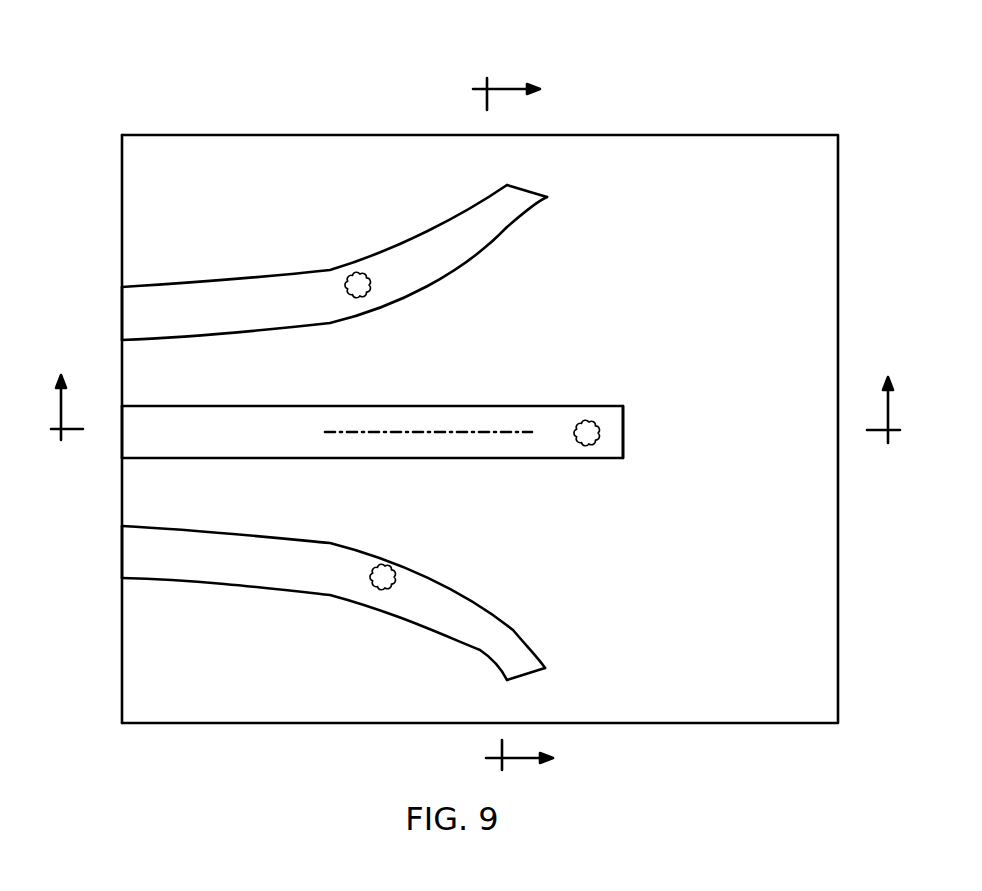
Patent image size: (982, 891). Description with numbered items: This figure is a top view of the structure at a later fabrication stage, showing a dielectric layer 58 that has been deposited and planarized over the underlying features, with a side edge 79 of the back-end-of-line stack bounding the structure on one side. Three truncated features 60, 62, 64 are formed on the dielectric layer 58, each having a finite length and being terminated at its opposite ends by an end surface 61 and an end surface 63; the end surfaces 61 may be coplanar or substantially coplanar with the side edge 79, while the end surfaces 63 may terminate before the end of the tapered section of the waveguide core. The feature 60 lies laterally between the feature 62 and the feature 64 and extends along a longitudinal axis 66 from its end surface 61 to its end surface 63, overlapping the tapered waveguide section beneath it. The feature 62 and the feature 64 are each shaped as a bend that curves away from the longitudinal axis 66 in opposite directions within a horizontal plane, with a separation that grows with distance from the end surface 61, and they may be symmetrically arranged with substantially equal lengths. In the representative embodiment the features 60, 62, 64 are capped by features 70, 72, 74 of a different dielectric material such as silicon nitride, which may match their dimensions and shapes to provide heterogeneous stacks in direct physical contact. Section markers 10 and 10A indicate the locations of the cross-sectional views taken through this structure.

The dielectric layer 58 is at (480, 429).
The side edge 79 is at (122, 250).
The feature 74 is at (260, 303).
The feature 72 is at (290, 565).
The feature 70 is at (283, 430).
The longitudinal axis 66 is at (477, 430).
The end surface 63 is at (530, 192).
The end surface 61 is at (122, 311).
The feature 64 is at (353, 283).
The feature 60 is at (587, 427).
The feature 62 is at (380, 575).
The section line 10 is at (480, 394).
The section line 10A is at (542, 424).